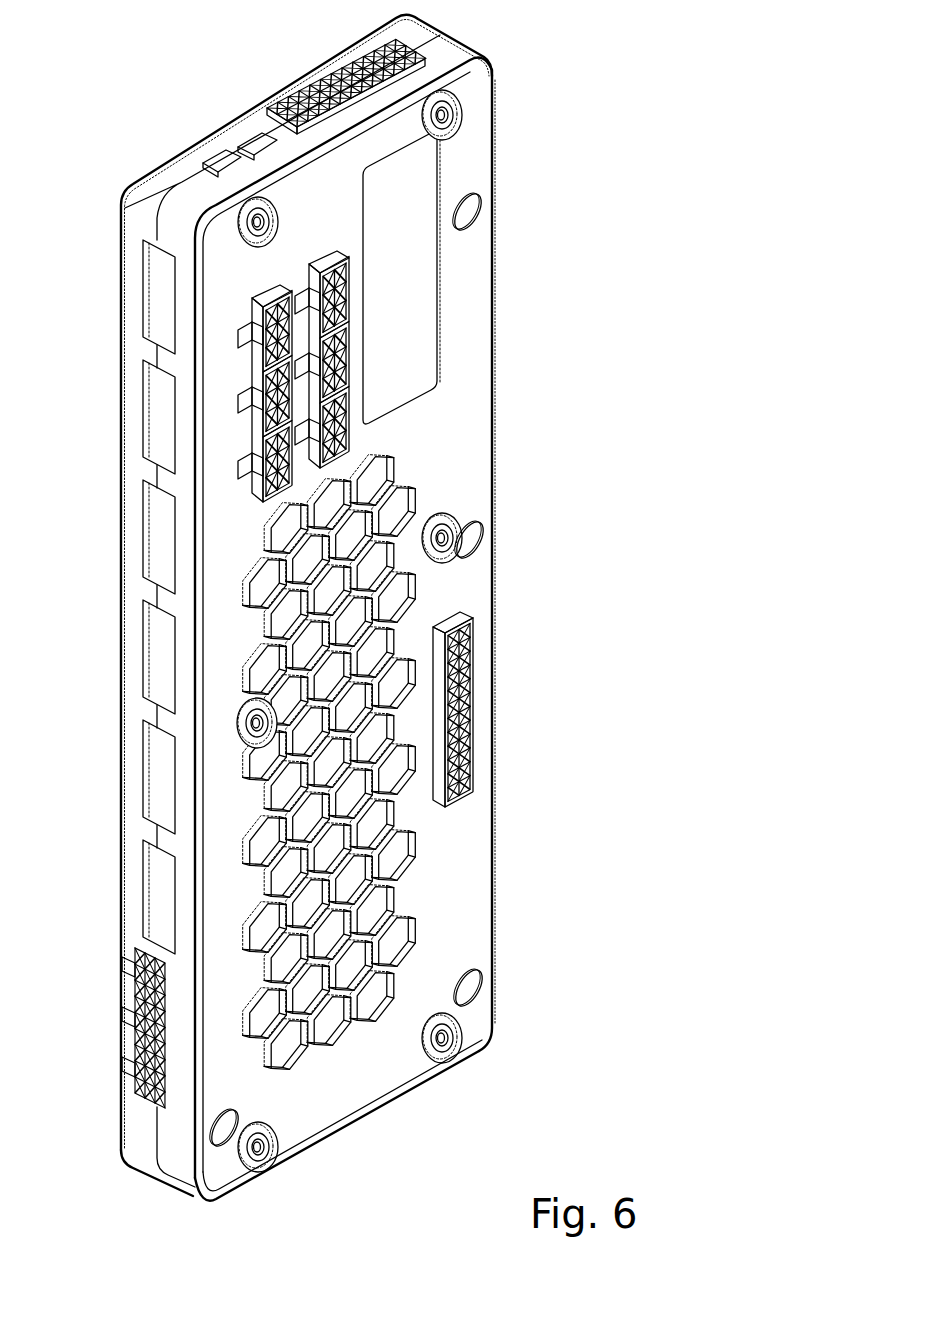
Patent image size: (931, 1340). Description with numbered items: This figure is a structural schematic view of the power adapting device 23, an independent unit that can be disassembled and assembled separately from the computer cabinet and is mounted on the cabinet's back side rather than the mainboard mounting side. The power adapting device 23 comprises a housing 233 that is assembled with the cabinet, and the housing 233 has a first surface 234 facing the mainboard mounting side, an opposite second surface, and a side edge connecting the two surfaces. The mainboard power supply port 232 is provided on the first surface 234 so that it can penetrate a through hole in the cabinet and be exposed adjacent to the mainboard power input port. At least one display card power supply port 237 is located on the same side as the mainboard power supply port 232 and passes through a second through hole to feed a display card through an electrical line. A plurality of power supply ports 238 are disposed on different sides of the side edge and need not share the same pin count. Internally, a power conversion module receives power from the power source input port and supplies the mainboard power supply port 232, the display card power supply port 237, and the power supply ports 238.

The power adapting device 23 is at (588, 54).
The mainboard power supply port 232 is at (471, 715).
The housing 233 is at (386, 1114).
The first surface 234 is at (474, 880).
The display card power supply port 237 is at (262, 370).
The power supply ports 238 is at (337, 73).